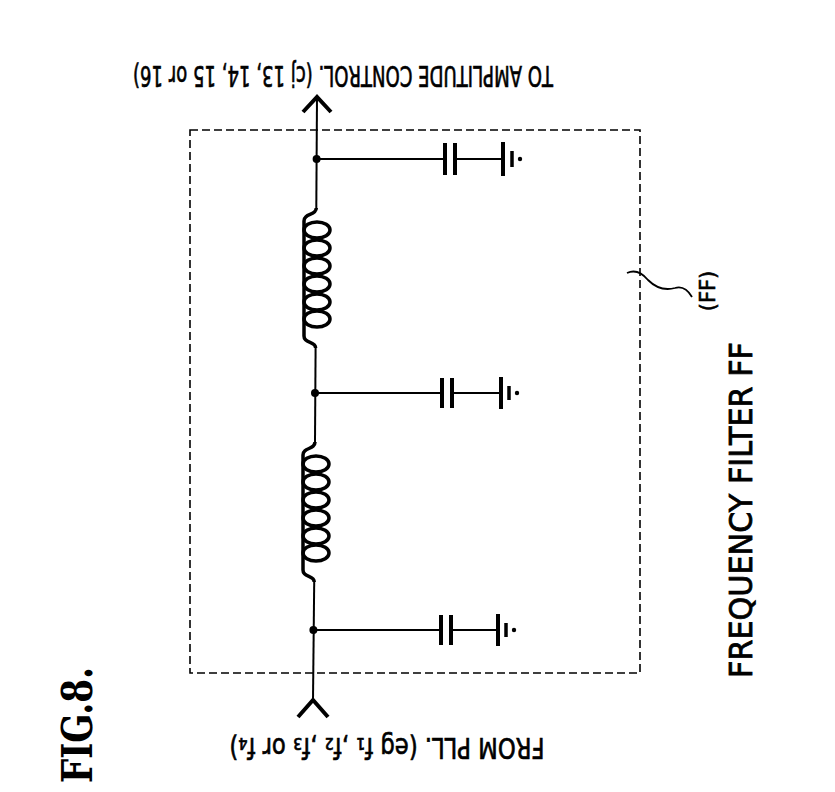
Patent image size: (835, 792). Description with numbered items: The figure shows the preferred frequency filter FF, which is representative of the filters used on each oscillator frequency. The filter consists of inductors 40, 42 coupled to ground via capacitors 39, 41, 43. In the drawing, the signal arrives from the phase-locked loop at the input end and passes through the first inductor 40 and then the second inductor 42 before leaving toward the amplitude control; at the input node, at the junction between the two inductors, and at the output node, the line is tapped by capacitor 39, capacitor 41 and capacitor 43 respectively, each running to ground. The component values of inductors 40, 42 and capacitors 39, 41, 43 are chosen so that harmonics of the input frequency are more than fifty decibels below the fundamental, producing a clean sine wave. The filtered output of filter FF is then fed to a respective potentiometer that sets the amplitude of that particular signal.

The capacitor 39 is at (445, 612).
The inductor 40 is at (302, 498).
The capacitor 41 is at (444, 413).
The inductor 42 is at (304, 267).
The capacitor 43 is at (448, 178).